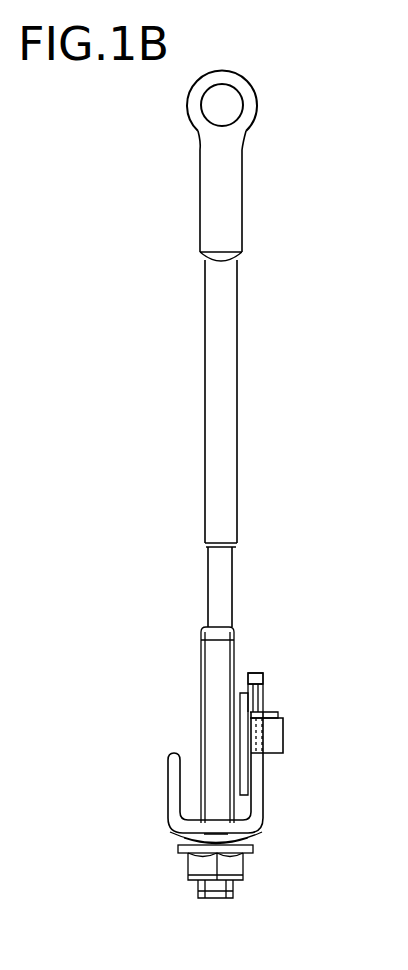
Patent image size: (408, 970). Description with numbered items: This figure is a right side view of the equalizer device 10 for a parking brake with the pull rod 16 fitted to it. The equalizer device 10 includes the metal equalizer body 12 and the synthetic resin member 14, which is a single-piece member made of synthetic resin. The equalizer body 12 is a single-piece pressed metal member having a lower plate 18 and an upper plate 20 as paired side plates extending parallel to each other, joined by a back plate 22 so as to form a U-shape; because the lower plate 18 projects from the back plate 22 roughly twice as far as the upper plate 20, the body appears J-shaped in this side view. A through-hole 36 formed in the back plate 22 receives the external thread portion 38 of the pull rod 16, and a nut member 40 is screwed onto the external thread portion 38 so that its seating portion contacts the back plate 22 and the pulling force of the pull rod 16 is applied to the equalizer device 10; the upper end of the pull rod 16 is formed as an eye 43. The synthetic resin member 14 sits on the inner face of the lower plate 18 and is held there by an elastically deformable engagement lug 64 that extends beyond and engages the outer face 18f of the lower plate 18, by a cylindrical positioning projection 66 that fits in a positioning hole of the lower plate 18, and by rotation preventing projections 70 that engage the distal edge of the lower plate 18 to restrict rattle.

The equalizer device 10 is at (306, 848).
The equalizer body 12 is at (150, 742).
The synthetic resin member 14 is at (267, 658).
The pull rod 16 is at (235, 349).
The lower plate 18 is at (258, 783).
The outer face 18f is at (268, 698).
The upper plate 20 is at (176, 783).
The back plate 22 is at (181, 838).
The through-hole 36 is at (240, 860).
The external thread portion 38 is at (217, 690).
The nut member 40 is at (209, 882).
The eye hole 43 is at (252, 108).
The engagement lug 64 is at (283, 742).
The positioning projection 66 is at (282, 716).
The rotation preventing projection 70 is at (255, 673).